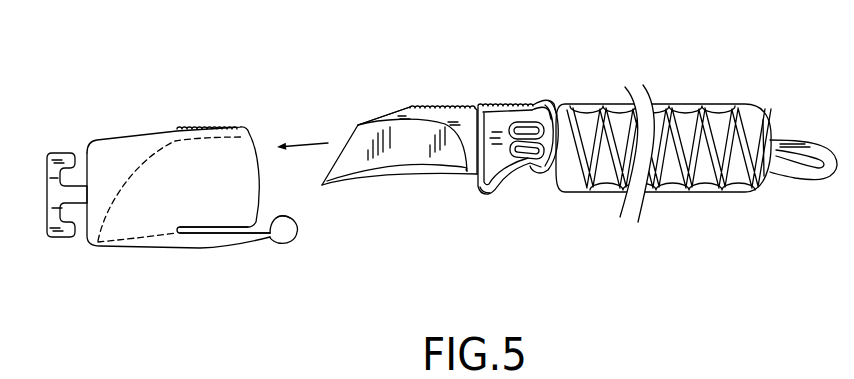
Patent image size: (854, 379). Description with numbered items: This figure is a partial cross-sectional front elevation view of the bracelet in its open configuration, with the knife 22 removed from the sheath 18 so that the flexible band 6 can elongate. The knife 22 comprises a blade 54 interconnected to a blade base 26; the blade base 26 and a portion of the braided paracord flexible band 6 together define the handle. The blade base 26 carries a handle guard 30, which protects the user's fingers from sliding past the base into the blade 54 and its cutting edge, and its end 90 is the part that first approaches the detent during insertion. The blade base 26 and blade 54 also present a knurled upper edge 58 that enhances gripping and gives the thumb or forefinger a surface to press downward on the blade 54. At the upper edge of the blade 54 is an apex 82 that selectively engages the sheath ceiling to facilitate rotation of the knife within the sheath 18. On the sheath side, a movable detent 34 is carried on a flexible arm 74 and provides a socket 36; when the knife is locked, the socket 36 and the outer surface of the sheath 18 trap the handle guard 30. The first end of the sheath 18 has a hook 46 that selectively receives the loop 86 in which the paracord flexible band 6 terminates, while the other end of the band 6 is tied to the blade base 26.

The flexible band 6 is at (704, 61).
The sheath 18 is at (145, 109).
The knife 22 is at (515, 222).
The blade base 26 is at (531, 113).
The handle guard 30 is at (498, 188).
The detent 34 is at (290, 226).
The socket 36 is at (276, 244).
The hook 46 is at (58, 231).
The blade 54 is at (421, 153).
The knurled upper edge 58 is at (470, 107).
The arm 74 is at (205, 244).
The apex 82 is at (413, 105).
The loop 86 is at (813, 178).
The end of the handle guard 90 is at (484, 198).